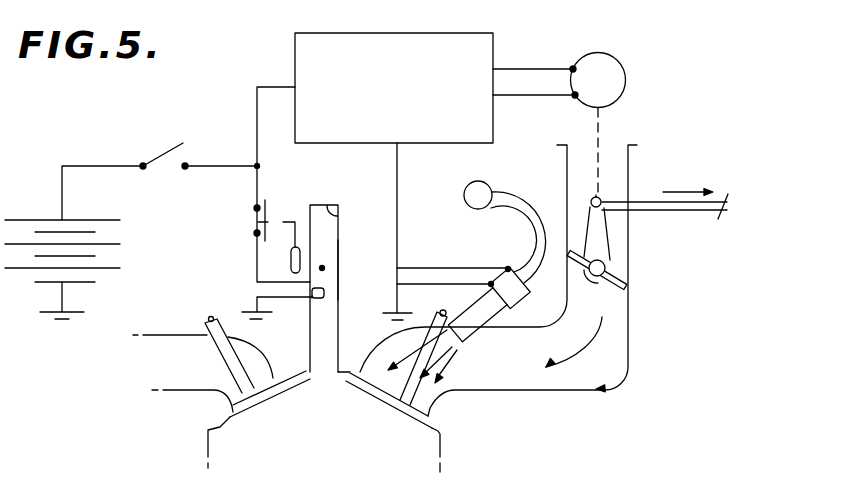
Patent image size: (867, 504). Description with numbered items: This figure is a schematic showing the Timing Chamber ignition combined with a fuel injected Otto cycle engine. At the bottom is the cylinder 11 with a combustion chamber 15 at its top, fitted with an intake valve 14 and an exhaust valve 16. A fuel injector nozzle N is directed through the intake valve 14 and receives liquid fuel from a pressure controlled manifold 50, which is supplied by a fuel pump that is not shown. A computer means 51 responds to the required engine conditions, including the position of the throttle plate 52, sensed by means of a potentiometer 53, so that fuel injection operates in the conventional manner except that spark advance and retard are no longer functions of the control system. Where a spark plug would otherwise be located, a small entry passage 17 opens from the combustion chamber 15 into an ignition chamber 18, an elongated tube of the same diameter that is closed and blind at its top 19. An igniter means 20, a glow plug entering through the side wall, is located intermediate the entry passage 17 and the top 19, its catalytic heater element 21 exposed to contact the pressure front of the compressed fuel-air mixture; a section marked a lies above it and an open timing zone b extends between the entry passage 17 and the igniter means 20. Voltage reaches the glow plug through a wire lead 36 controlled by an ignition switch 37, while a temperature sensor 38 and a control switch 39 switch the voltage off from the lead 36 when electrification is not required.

The cylinder 11 is at (435, 447).
The intake valve 14 is at (430, 416).
The combustion chamber 15 is at (352, 436).
The exhaust valve 16 is at (230, 411).
The entry passage 17 is at (321, 373).
The ignition chamber 18 is at (322, 268).
The top of ignition chamber 19 is at (340, 213).
The igniter means 20 is at (326, 295).
The heater element 21 is at (318, 298).
The wire lead 36 is at (257, 193).
The ignition switch 37 is at (160, 152).
The temperature sensor 38 is at (291, 263).
The control means or switch 39 is at (255, 216).
The pressure controlled manifold 50 is at (480, 193).
The computer means 51 is at (394, 88).
The throttle plate 52 is at (614, 274).
The potentiometer 53 is at (613, 73).
The fuel injector nozzle N is at (503, 258).
The passage section a is at (322, 240).
The timing zone b is at (323, 330).